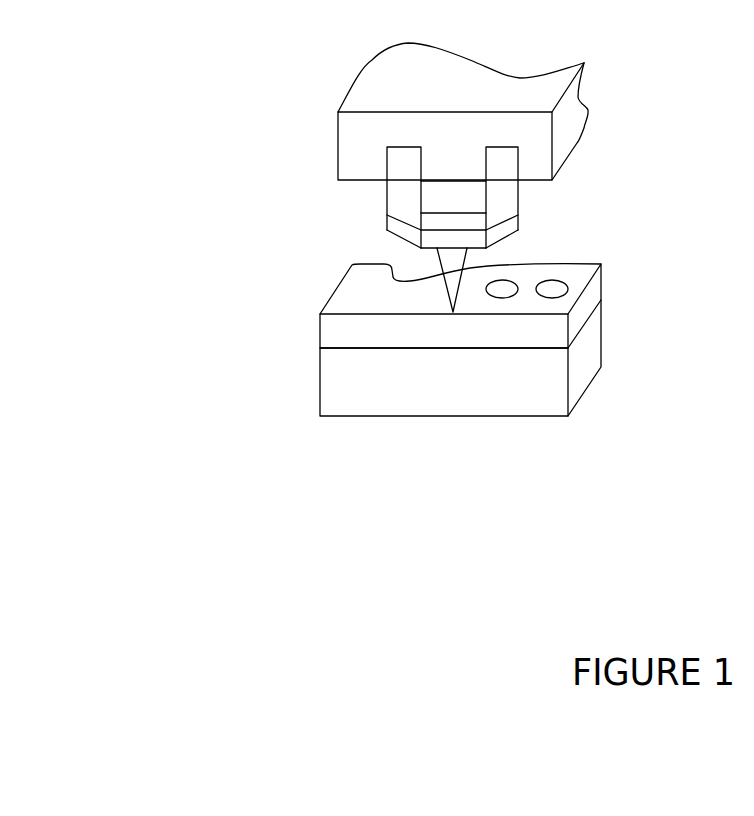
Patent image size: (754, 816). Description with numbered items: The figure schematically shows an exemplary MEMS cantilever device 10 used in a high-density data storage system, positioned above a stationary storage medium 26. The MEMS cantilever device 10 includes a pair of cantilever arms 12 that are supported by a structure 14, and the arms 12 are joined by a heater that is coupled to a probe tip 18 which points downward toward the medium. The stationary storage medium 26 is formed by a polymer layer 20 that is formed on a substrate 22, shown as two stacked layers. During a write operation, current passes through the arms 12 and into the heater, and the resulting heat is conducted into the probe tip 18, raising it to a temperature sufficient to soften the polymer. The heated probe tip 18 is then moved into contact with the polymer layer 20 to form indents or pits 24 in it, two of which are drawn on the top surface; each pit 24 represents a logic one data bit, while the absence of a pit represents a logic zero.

The MEMS cantilever device 10 is at (441, 177).
The cantilever arms 12 is at (387, 197).
The structure 14 is at (588, 110).
The probe tip 18 is at (450, 292).
The polymer layer 20 is at (603, 285).
The substrate 22 is at (603, 345).
The pits 24 is at (559, 280).
The stationary storage medium 26 is at (431, 363).